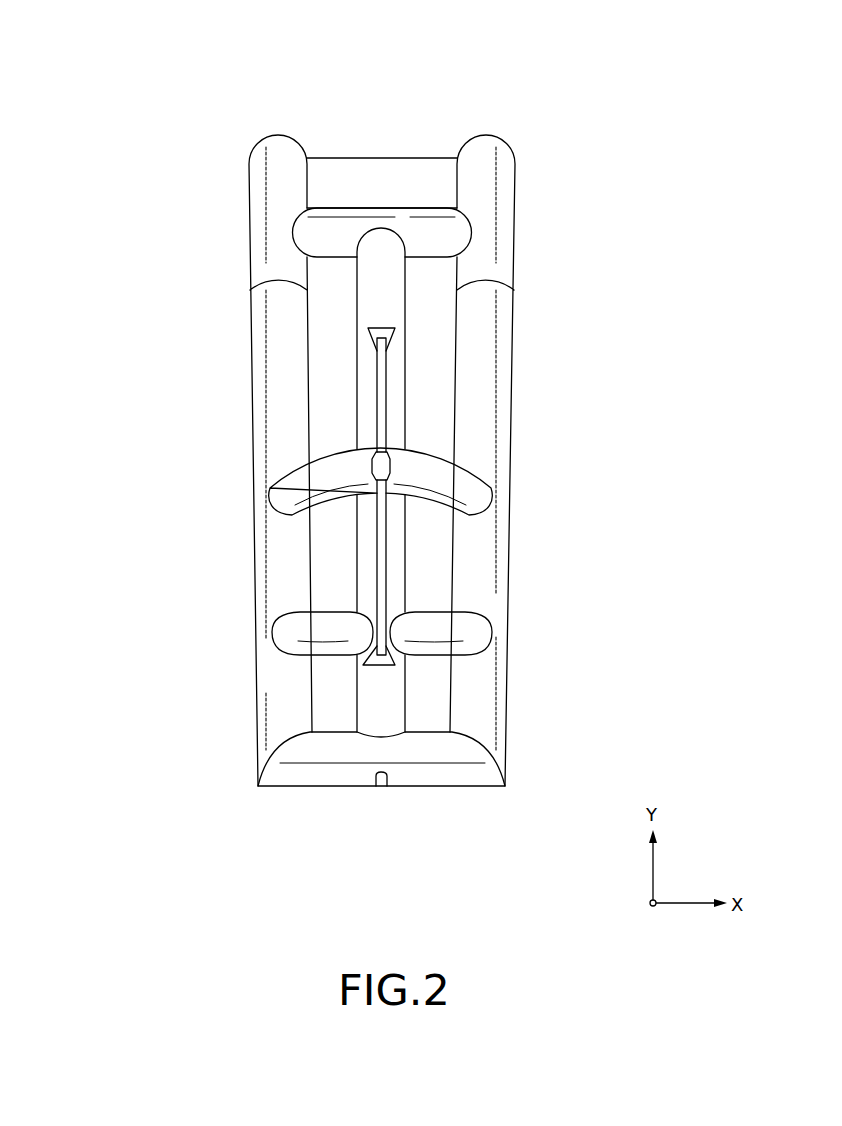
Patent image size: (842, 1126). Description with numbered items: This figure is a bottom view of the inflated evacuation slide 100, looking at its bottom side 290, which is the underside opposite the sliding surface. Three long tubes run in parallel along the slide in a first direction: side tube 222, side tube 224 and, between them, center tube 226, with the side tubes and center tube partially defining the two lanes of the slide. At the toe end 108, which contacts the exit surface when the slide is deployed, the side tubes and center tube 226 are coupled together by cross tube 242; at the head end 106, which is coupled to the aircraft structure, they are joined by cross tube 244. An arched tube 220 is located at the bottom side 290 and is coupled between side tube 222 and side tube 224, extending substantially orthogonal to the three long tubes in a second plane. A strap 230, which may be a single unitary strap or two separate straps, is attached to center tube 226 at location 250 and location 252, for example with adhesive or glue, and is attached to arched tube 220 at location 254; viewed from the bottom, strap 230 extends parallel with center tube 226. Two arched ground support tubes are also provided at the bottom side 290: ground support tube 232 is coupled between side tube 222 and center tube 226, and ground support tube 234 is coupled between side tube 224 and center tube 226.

The evacuation slide 100 is at (600, 103).
The head end 106 is at (403, 105).
The toe end 108 is at (375, 803).
The arched tube 220 is at (435, 473).
The side tube 222 is at (493, 387).
The side tube 224 is at (287, 350).
The center tube 226 is at (398, 370).
The strap 230 is at (383, 533).
The ground support tube 232 is at (452, 627).
The ground support tube 234 is at (313, 635).
The cross tube 242 is at (432, 755).
The cross tube 244 is at (452, 222).
The location 250 is at (352, 672).
The location 252 is at (402, 328).
The location 254 is at (355, 467).
The bottom side 290 is at (322, 421).